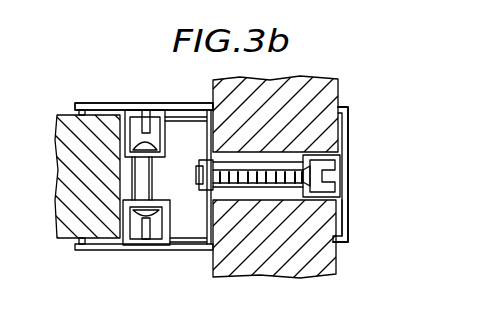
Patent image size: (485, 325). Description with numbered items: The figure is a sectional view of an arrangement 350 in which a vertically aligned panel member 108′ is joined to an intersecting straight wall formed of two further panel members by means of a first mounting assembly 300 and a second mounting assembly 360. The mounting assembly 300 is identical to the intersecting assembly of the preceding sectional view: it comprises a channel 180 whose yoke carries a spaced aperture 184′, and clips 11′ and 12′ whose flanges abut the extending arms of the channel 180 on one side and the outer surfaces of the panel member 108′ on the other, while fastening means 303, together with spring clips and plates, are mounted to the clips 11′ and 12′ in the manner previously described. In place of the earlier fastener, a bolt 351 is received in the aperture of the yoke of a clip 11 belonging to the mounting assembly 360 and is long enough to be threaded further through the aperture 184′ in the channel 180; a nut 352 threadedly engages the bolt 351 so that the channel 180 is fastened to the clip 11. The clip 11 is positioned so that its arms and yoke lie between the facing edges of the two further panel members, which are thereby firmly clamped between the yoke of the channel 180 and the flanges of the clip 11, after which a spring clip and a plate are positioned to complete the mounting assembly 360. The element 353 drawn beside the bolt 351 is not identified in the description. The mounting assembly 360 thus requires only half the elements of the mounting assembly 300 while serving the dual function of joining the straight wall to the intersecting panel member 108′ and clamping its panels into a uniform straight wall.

The clip 11′ is at (110, 100).
The mounting assembly 300 is at (188, 98).
The aperture 184′ is at (209, 160).
The fastening means 303 is at (150, 166).
The nut 352 is at (202, 186).
The bolt 351 is at (257, 186).
The spring teeth 353 is at (261, 188).
The panel member 108′ is at (70, 196).
The clip 12′ is at (105, 248).
The channel 180 is at (202, 222).
The arrangement 350 is at (400, 81).
The mounting assembly 360 is at (356, 191).
The clip 11 is at (343, 218).